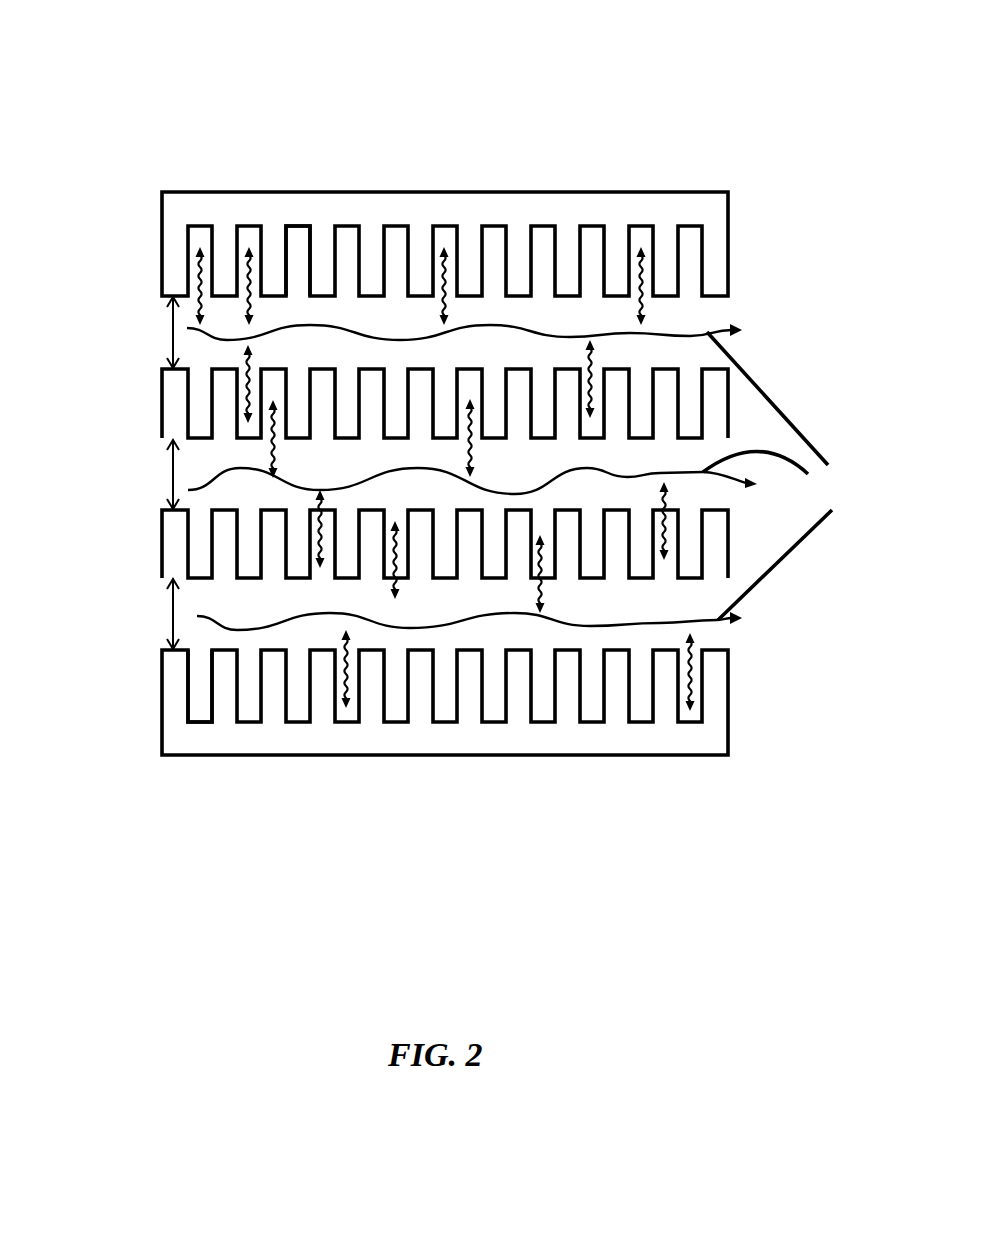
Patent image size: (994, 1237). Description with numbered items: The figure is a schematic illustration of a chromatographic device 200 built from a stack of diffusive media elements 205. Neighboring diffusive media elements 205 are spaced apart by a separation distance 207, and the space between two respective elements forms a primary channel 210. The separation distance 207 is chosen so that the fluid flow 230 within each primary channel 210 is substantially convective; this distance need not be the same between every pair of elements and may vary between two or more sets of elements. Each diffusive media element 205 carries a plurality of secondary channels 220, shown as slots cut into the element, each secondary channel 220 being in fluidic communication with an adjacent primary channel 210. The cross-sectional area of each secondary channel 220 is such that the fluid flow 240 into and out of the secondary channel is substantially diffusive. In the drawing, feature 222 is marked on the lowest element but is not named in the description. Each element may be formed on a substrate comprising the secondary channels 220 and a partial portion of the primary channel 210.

The chromatographic device 200 is at (125, 121).
The diffusive media element 205 is at (668, 192).
The separation distance 207 is at (173, 340).
The primary channel 210 is at (459, 467).
The secondary channel 220 is at (297, 263).
The slot of bottom plate 222 is at (203, 657).
The fluid flow within the primary channel 230 is at (779, 474).
The fluid flow into and out of a secondary channel 240 is at (203, 272).